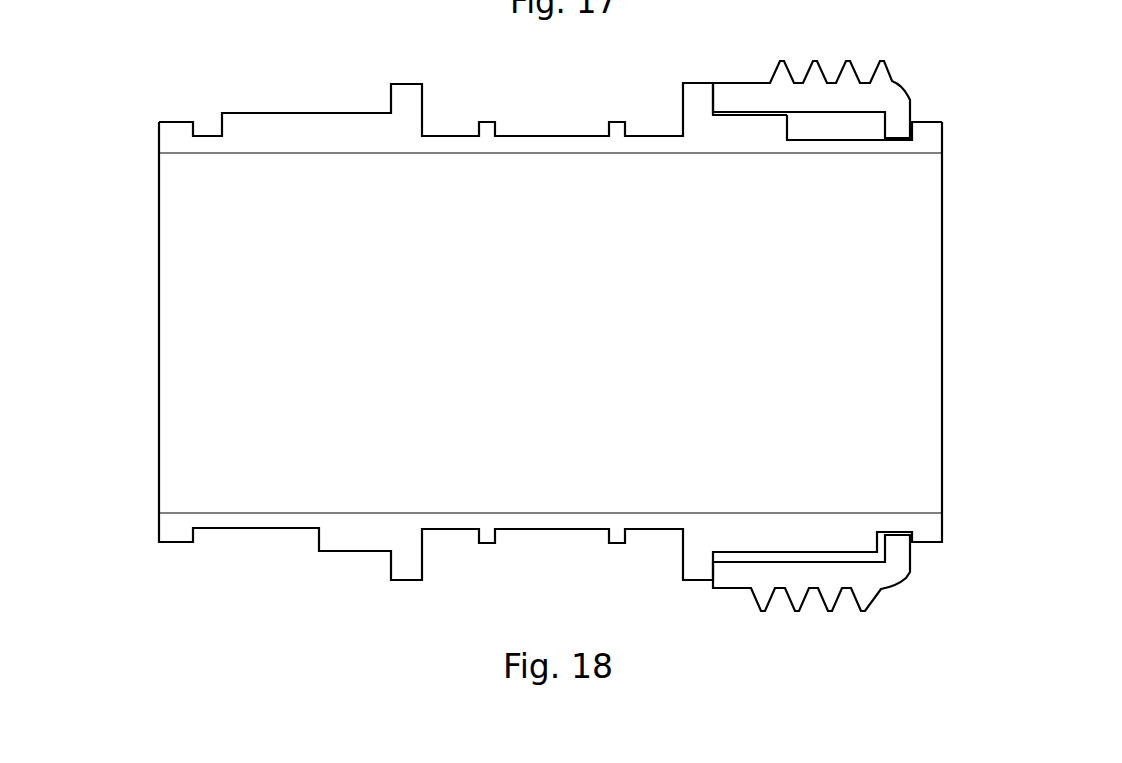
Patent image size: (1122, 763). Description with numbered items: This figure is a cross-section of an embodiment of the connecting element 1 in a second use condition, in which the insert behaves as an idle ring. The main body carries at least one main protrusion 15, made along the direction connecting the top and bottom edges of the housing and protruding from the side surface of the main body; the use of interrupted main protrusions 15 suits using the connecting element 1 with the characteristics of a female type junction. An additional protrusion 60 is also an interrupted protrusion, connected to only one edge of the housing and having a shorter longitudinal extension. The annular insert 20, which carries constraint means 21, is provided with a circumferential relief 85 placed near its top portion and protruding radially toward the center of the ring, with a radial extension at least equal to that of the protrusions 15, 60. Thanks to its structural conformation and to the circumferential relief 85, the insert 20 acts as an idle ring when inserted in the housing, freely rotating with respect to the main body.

The connecting element 1 is at (148, 73).
The main protrusion 15 is at (306, 138).
The annular insert 20 is at (731, 100).
The constraint means 21 is at (875, 0).
The additional protrusion 60 is at (777, 133).
The circumferential relief 85 is at (900, 118).